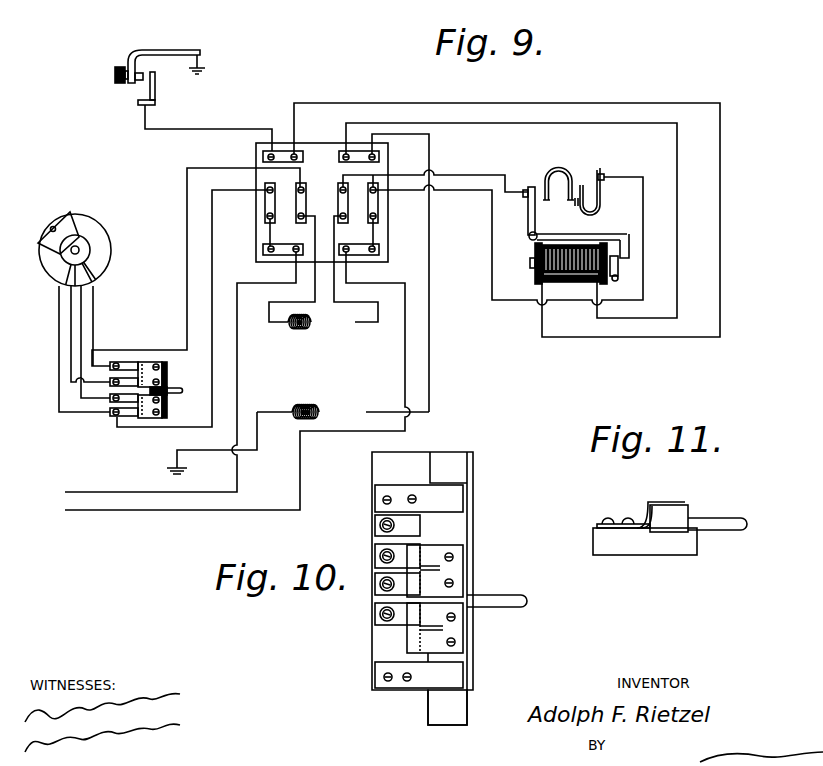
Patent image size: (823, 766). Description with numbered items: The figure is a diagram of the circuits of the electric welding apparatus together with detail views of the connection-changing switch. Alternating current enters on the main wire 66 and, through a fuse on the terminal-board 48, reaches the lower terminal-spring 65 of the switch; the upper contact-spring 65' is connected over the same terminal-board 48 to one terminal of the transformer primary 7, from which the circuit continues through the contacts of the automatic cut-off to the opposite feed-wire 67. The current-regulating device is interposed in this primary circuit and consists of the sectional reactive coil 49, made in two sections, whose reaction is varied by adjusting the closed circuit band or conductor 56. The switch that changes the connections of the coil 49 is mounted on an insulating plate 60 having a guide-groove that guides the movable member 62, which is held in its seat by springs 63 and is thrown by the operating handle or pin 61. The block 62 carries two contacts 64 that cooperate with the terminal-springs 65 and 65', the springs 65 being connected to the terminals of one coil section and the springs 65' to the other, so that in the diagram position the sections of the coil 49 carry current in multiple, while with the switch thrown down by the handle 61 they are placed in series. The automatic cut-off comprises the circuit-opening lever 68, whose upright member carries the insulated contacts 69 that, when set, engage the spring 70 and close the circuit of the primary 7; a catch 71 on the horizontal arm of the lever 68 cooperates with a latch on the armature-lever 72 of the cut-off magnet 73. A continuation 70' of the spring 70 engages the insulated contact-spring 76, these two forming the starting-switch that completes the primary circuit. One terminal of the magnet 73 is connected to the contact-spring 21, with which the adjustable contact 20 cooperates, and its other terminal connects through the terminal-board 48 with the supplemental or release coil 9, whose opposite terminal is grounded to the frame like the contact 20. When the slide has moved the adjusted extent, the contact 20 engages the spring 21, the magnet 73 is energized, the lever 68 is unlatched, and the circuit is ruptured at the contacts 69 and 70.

In FIG. 9, the primary 7 is at (317, 324).
In FIG. 9, the supplemental coil 9 is at (325, 411).
In FIG. 9, the adjustable contact 20 is at (174, 50).
In FIG. 9, the contact-spring 21 is at (157, 90).
In FIG. 9, the terminal-board 48 is at (256, 150).
In FIG. 9, the sectional reactive coil 49 is at (60, 278).
In FIG. 9, the closed circuit band 56 is at (61, 217).
In FIG. 10, the plate 60 is at (375, 638).
In FIG. 11, the plate 60 is at (618, 550).
In FIG. 9, the operating handle 61 is at (172, 390).
In FIG. 10, the operating handle 61 is at (527, 603).
In FIG. 11, the operating handle 61 is at (727, 529).
In FIG. 9, the movable member 62 is at (168, 373).
In FIG. 10, the movable member 62 is at (462, 710).
In FIG. 11, the movable member 62 is at (662, 517).
In FIG. 10, the springs 63 is at (419, 586).
In FIG. 9, the contacts 64 is at (151, 363).
In FIG. 10, the contacts 64 is at (457, 569).
In FIG. 9, the terminal-springs 65 is at (92, 416).
In FIG. 10, the terminal-springs 65 is at (360, 587).
In FIG. 9, the terminal-springs 65' is at (109, 387).
In FIG. 10, the terminal-springs 65' is at (371, 563).
In FIG. 9, the main wire 66 is at (142, 492).
In FIG. 9, the feed-wire 67 is at (187, 510).
In FIG. 9, the circuit-opening lever 68 is at (537, 222).
In FIG. 9, the insulated contacts 69 is at (536, 198).
In FIG. 9, the spring 70 is at (543, 178).
In FIG. 9, the continuation of spring 70' is at (592, 179).
In FIG. 9, the catch 71 is at (632, 250).
In FIG. 9, the armature-lever 72 is at (621, 270).
In FIG. 9, the cut-off magnet 73 is at (568, 284).
In FIG. 9, the insulated contact-spring 76 is at (601, 205).